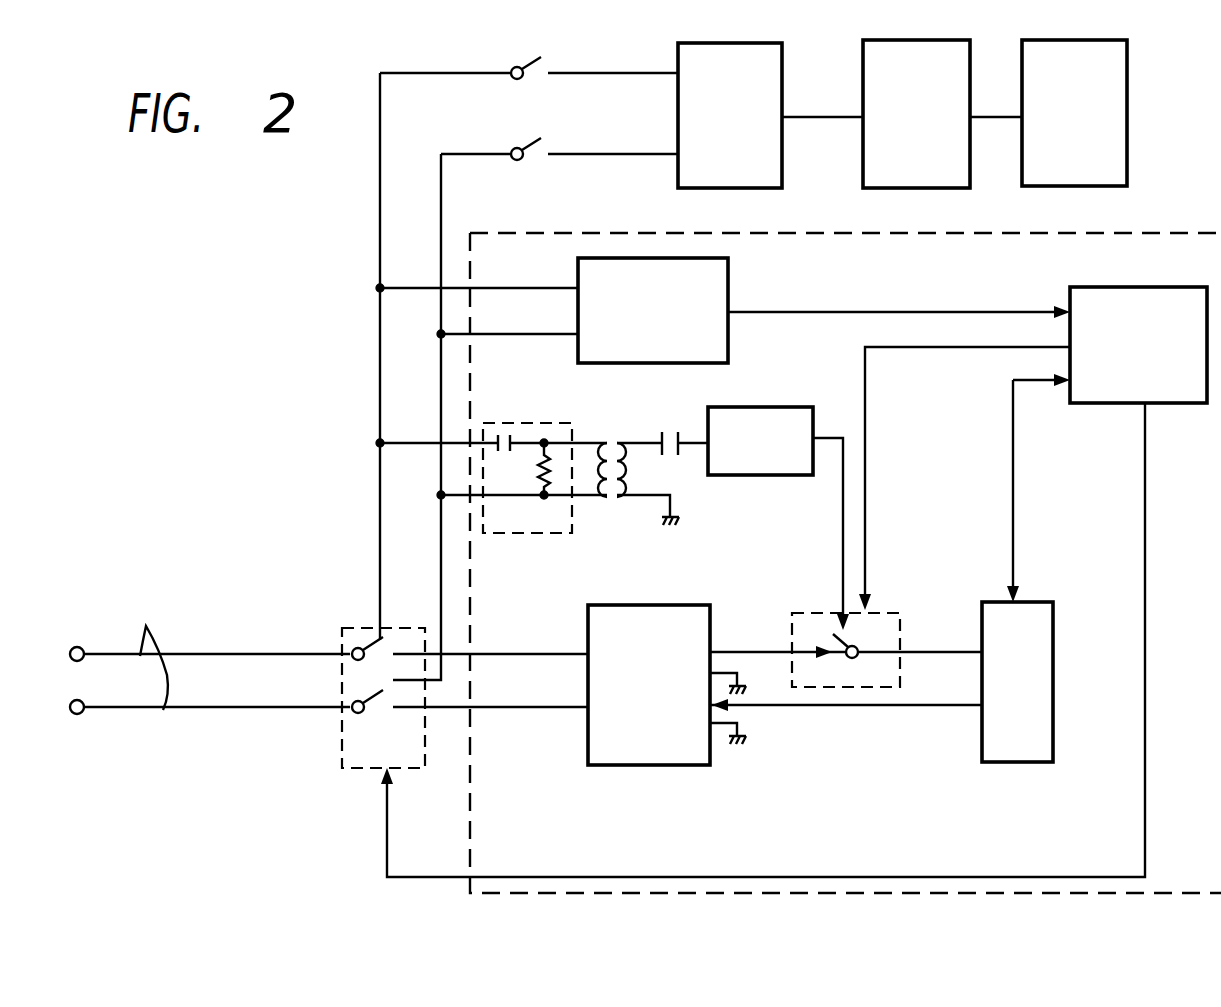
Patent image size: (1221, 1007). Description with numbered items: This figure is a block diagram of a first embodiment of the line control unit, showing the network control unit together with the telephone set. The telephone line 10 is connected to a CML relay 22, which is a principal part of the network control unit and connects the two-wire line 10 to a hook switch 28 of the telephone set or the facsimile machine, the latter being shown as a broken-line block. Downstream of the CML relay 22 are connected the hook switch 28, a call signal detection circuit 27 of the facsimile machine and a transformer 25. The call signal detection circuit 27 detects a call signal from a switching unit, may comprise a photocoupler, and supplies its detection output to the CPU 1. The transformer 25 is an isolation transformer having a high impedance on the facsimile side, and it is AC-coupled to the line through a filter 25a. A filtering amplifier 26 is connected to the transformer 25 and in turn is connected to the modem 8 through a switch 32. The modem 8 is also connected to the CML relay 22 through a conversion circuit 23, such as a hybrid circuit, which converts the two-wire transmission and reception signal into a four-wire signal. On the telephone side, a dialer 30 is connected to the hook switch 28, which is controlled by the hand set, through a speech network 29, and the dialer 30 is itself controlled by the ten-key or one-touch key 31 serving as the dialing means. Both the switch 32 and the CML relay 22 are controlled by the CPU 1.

The CPU 1 is at (1190, 286).
The modem 8 is at (1048, 601).
The telephone line 10 is at (210, 643).
The CML relay 22 is at (353, 627).
The conversion circuit 23 is at (692, 604).
The transformer 25 is at (608, 438).
The filter 25a is at (506, 535).
The filtering amplifier 26 is at (792, 406).
The call signal detection circuit 27 is at (730, 272).
The hook switch 28 is at (520, 162).
The speech network 29 is at (783, 180).
The dialer 30 is at (970, 165).
The ten-key or one-touch key 31 is at (1128, 165).
The switch 32 is at (813, 612).